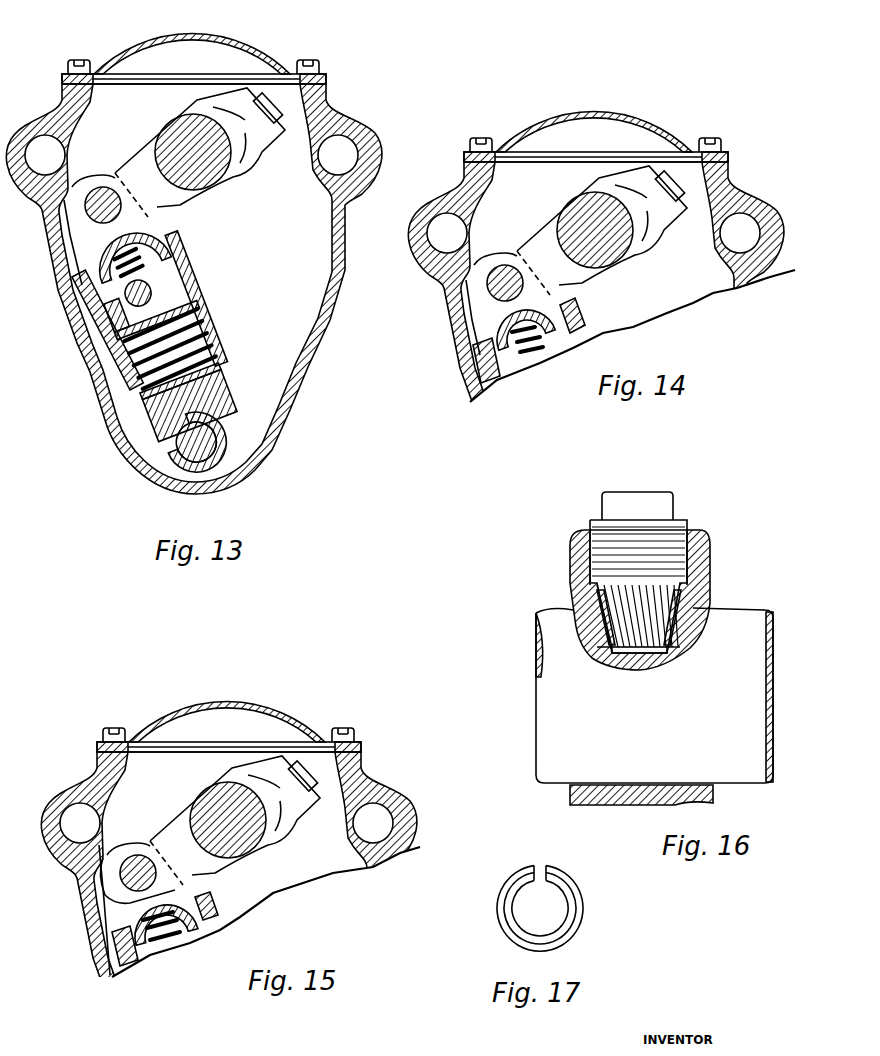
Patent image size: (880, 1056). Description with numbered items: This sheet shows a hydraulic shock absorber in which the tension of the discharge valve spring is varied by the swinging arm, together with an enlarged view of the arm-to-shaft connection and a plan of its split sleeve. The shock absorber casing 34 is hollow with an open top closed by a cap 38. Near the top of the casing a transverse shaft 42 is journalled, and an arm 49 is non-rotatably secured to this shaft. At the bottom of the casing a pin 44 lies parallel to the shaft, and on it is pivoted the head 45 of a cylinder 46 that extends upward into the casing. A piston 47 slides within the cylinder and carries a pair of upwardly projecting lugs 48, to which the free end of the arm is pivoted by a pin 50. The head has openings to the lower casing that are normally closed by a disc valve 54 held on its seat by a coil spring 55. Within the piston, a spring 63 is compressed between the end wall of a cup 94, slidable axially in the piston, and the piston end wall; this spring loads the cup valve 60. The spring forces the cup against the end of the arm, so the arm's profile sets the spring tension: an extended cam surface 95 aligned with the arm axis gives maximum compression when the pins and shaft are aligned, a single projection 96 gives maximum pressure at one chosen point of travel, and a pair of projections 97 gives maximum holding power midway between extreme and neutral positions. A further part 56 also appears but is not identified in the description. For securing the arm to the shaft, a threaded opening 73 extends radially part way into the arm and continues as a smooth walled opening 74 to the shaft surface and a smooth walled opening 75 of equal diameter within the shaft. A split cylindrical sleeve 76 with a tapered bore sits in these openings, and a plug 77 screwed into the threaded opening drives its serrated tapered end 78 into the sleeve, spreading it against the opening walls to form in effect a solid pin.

In FIG. 13, the shock absorber casing 34 is at (302, 378).
In FIG. 14, the shock absorber casing 34 is at (478, 392).
In FIG. 15, the shock absorber casing 34 is at (370, 868).
In FIG. 13, the cap 38 is at (267, 50).
In FIG. 14, the cap 38 is at (608, 110).
In FIG. 15, the cap 38 is at (193, 703).
In FIG. 13, the transverse shaft 42 is at (220, 173).
In FIG. 14, the transverse shaft 42 is at (620, 255).
In FIG. 15, the transverse shaft 42 is at (250, 843).
In FIG. 16, the transverse shaft 42 is at (543, 733).
In FIG. 13, the pin 44 is at (202, 462).
In FIG. 13, the head 45 is at (230, 412).
In FIG. 13, the cylinder 46 is at (212, 330).
In FIG. 14, the cylinder 46 is at (474, 386).
In FIG. 15, the cylinder 46 is at (110, 970).
In FIG. 13, the piston 47 is at (157, 287).
In FIG. 14, the piston 47 is at (475, 364).
In FIG. 15, the piston 47 is at (112, 945).
In FIG. 13, the lugs or arms 48 is at (80, 253).
In FIG. 14, the lugs or arms 48 is at (548, 299).
In FIG. 15, the lugs or arms 48 is at (185, 888).
In FIG. 13, the arm 49 is at (147, 150).
In FIG. 14, the arm 49 is at (548, 227).
In FIG. 15, the arm 49 is at (182, 810).
In FIG. 16, the arm 49 is at (708, 580).
In FIG. 13, the pin 50 is at (87, 210).
In FIG. 14, the pin 50 is at (488, 290).
In FIG. 15, the pin 50 is at (137, 852).
In FIG. 13, the disc valve 54 is at (205, 372).
In FIG. 13, the coil spring 55 is at (128, 372).
In FIG. 13, the washer plate 56 is at (195, 309).
In FIG. 13, the cup valve 60 is at (118, 310).
In FIG. 13, the spring 63 is at (150, 258).
In FIG. 14, the spring 63 is at (535, 348).
In FIG. 15, the spring 63 is at (165, 940).
In FIG. 16, the threaded opening 73 is at (588, 550).
In FIG. 16, the smooth walled opening 74 is at (590, 607).
In FIG. 16, the smooth walled opening 75 is at (687, 638).
In FIG. 16, the split cylindrical sleeve 76 is at (593, 650).
In FIG. 17, the split cylindrical sleeve 76 is at (583, 903).
In FIG. 13, the plug 77 is at (267, 100).
In FIG. 14, the plug 77 is at (667, 170).
In FIG. 15, the plug 77 is at (293, 748).
In FIG. 16, the plug 77 is at (670, 530).
In FIG. 16, the tapered end 78 is at (650, 650).
In FIG. 13, the cup 94 is at (150, 233).
In FIG. 13, the cam surface 95 is at (73, 232).
In FIG. 14, the projection 96 is at (512, 316).
In FIG. 15, the pair of projections 97 is at (128, 898).